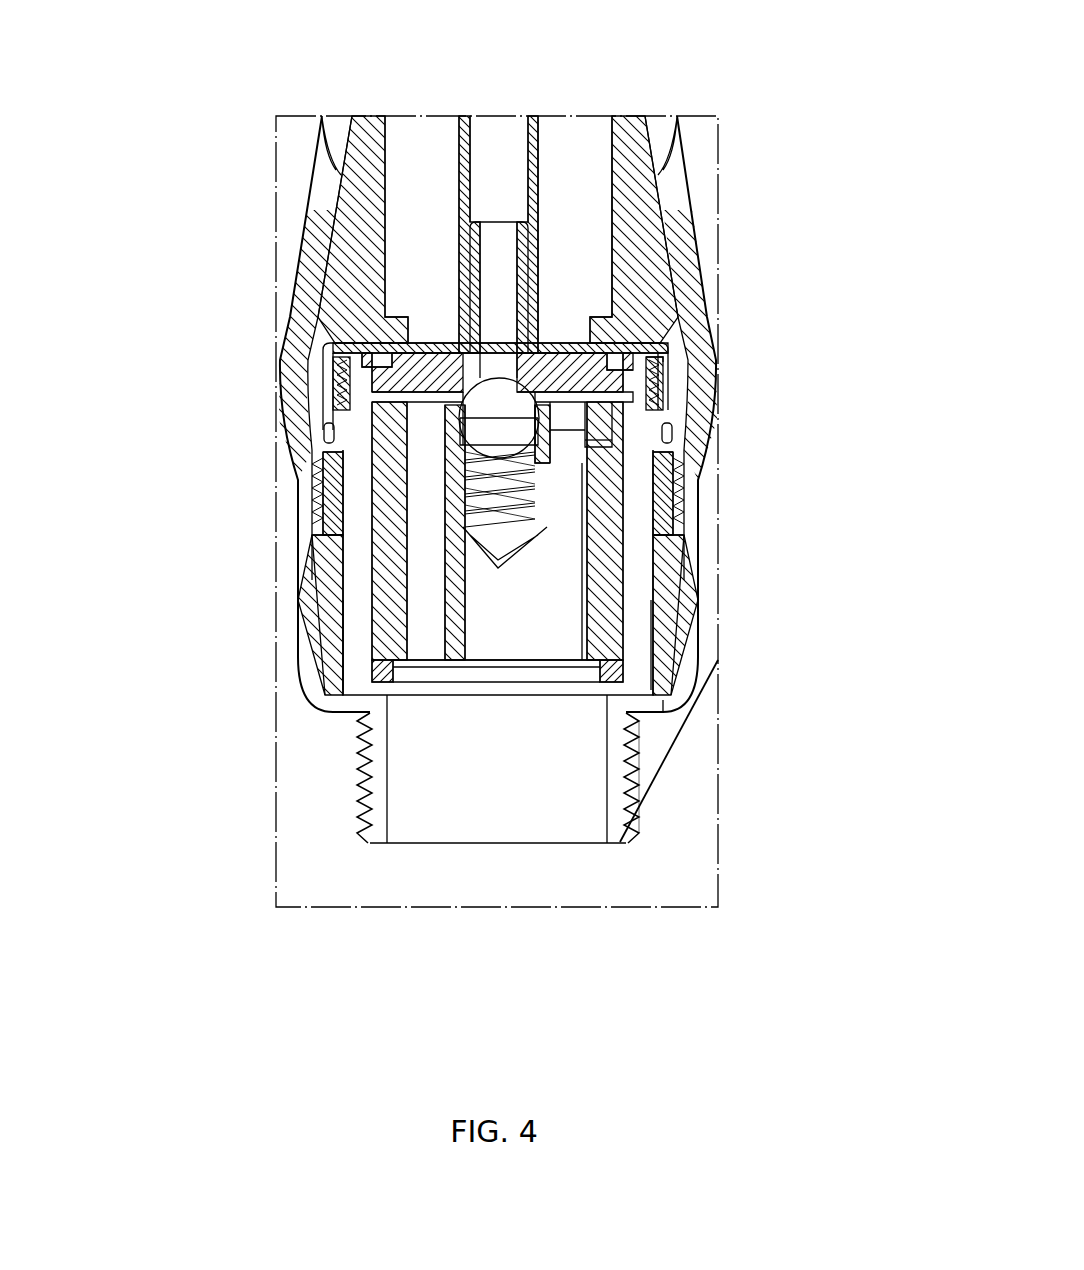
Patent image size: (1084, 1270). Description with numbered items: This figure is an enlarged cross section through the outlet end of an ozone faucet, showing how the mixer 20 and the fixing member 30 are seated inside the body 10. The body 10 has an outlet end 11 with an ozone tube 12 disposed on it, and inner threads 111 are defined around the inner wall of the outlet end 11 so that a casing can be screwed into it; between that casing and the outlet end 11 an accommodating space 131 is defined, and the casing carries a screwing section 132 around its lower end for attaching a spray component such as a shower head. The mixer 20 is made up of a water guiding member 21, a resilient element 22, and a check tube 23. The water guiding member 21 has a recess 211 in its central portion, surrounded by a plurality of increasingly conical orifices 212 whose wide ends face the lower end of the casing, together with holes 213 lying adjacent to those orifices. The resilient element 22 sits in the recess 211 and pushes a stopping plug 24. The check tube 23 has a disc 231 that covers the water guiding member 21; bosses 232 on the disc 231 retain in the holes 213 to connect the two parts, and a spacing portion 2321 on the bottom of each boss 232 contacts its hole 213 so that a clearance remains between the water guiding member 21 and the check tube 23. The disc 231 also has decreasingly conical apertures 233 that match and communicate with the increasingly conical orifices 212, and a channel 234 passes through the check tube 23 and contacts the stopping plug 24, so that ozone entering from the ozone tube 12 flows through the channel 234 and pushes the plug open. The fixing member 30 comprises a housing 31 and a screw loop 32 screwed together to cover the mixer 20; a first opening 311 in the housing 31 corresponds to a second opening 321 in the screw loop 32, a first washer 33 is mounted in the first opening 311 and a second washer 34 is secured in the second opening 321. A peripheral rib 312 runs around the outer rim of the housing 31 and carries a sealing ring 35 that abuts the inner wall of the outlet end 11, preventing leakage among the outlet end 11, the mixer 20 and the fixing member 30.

The body 10 is at (693, 176).
The outlet end 11 is at (355, 200).
The ozone tube 12 is at (540, 155).
The mixer 20 is at (573, 327).
The water guiding member 21 is at (372, 592).
The recess 211 is at (657, 668).
The increasingly conical orifices 212 is at (362, 627).
The holes 213 is at (610, 442).
The resilient element 22 is at (500, 560).
The check tube 23 is at (537, 262).
The disc 231 is at (340, 378).
The bosses 232 is at (610, 420).
The spacing portion 2321 is at (630, 395).
The decreasingly conical apertures 233 is at (455, 353).
The channel 234 is at (503, 247).
The stopping plug 24 is at (525, 512).
The fixing member 30 is at (713, 687).
The housing 31 is at (357, 662).
The first opening 311 is at (403, 696).
The peripheral rib 312 is at (325, 452).
The screw loop 32 is at (670, 372).
The second opening 321 is at (660, 322).
The first washer 33 is at (667, 707).
The second washer 34 is at (330, 345).
The sealing ring 35 is at (325, 432).
The inner threads 111 is at (312, 495).
The accommodating space 131 is at (345, 552).
The screwing section 132 is at (632, 785).